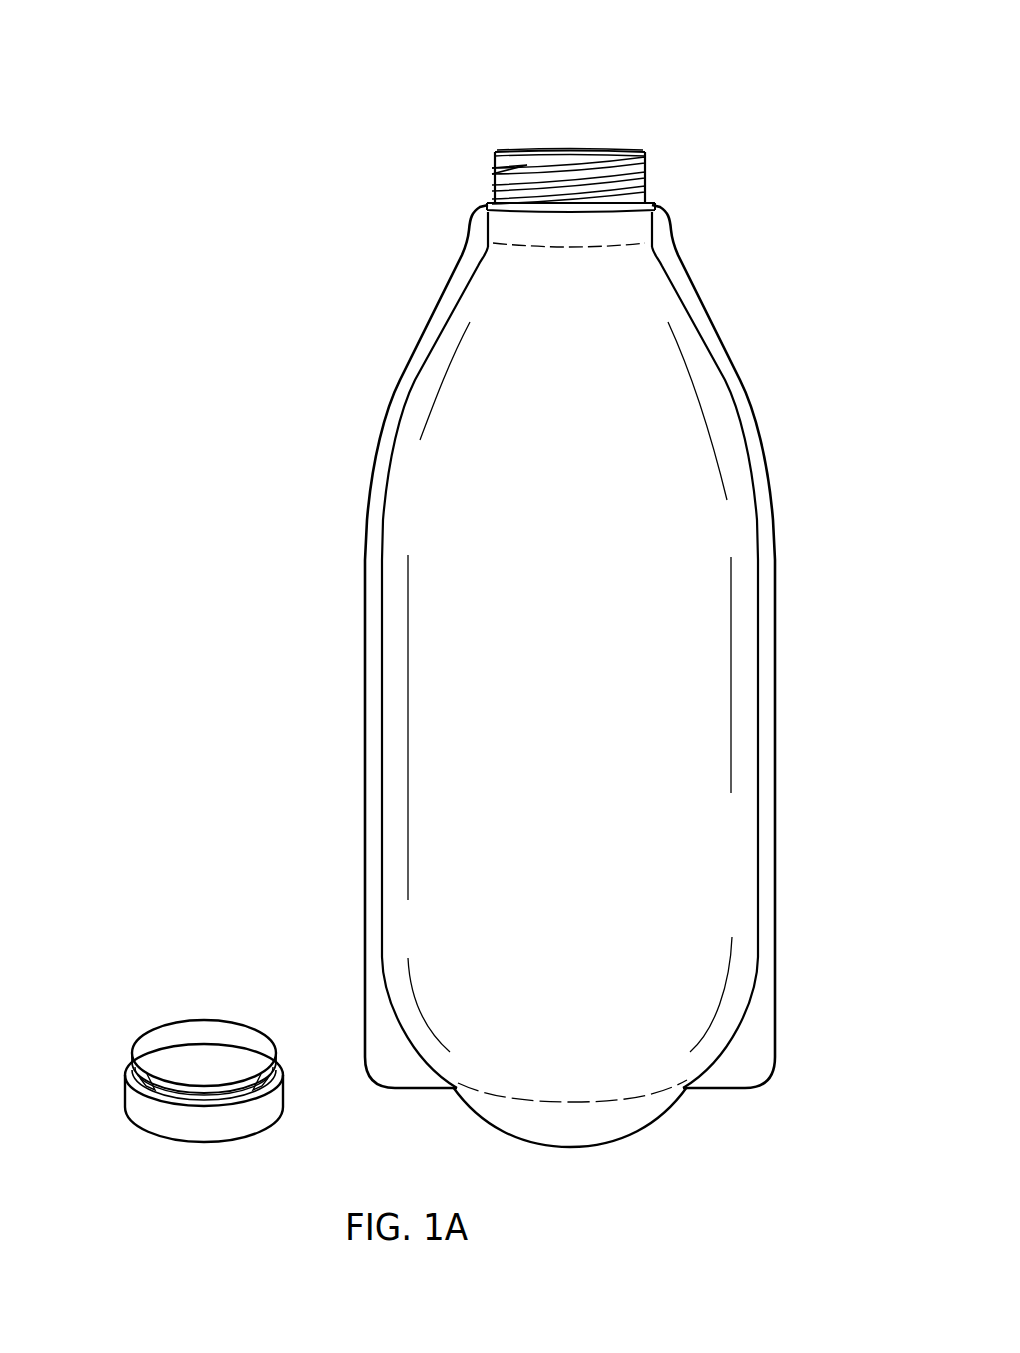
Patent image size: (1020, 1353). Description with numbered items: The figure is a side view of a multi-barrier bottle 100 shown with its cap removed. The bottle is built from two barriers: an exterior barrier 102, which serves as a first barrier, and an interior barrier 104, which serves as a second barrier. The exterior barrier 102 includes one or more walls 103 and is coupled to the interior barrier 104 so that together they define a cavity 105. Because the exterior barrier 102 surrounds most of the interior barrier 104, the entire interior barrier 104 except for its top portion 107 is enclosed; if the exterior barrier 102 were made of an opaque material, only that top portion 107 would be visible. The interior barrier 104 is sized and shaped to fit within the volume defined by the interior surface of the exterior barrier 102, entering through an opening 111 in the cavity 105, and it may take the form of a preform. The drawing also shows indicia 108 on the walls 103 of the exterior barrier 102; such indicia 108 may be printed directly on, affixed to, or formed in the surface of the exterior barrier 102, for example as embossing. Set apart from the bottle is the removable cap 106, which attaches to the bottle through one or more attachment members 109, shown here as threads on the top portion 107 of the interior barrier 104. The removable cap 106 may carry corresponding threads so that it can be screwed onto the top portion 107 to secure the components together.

The multi-barrier bottle 100 is at (436, 603).
The exterior barrier 102 is at (760, 430).
The walls 103 is at (420, 663).
The interior barrier 104 is at (645, 167).
The cavity 105 is at (600, 145).
The removable cap 106 is at (163, 1038).
The top portion 107 is at (713, 212).
The indicia 108 is at (625, 690).
The attachment members 109 is at (604, 166).
The opening 111 is at (540, 166).